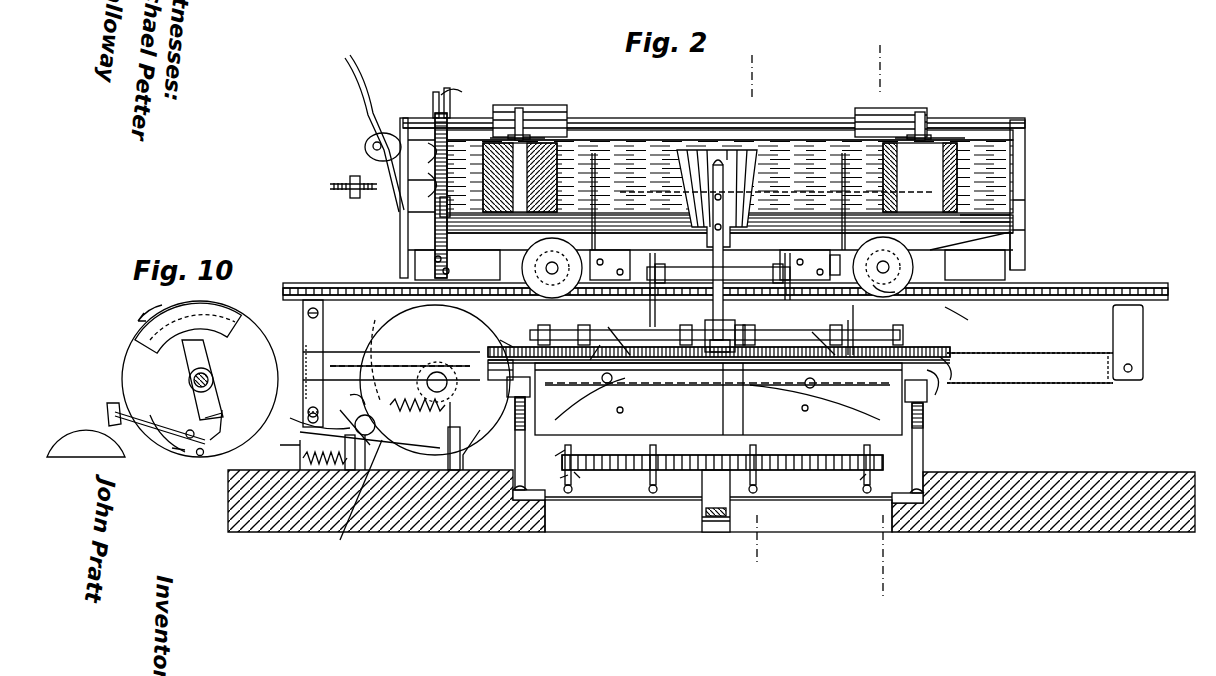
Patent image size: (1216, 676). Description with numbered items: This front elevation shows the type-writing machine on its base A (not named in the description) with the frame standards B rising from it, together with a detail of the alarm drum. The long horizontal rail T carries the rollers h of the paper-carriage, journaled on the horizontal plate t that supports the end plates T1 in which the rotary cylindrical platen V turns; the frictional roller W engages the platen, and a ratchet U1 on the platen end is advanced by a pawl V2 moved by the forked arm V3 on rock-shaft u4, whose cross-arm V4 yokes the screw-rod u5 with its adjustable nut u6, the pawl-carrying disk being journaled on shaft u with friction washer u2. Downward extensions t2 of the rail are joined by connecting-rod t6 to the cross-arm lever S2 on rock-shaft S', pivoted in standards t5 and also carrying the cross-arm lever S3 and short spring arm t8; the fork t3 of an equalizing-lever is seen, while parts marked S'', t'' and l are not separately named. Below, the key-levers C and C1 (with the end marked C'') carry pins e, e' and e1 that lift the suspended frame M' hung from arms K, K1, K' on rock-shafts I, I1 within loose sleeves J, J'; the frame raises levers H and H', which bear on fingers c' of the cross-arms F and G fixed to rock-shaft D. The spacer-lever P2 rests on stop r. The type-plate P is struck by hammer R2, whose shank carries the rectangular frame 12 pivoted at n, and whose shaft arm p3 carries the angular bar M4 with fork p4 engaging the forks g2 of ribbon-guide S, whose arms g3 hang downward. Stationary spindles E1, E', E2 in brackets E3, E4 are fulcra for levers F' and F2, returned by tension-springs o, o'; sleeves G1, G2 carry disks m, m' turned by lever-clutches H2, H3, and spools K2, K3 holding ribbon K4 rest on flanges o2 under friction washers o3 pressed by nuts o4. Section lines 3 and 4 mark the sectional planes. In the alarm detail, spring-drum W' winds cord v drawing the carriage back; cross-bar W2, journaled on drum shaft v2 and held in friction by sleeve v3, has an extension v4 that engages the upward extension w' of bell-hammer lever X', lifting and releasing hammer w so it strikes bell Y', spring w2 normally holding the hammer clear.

In FIG. 2, the base A is at (418, 532).
In FIG. 2, the frame standards B is at (514, 424).
In FIG. 2, the rail T is at (725, 323).
In FIG. 2, the platen V is at (660, 135).
In FIG. 2, the type-plate P is at (724, 180).
In FIG. 2, the rollers h is at (717, 267).
In FIG. 2, the arms K is at (719, 341).
In FIG. 2, the suspended frame M' is at (722, 453).
In FIG. 10, the spring-drum W' is at (200, 379).
In FIG. 10, the cross-bar W2 is at (188, 361).
In FIG. 10, the bell Y' is at (86, 443).
In FIG. 2, the lever F' is at (435, 380).
In FIG. 2, the cross-arm G is at (718, 399).
In FIG. 2, the spacer-lever P2 is at (702, 482).
In FIG. 2, the ribbon K4 is at (720, 177).
In FIG. 2, the frictional roller W is at (710, 110).
In FIG. 2, the spindle E1 is at (520, 108).
In FIG. 2, the spindle E2 is at (926, 112).
In FIG. 2, the bracket E3 is at (518, 387).
In FIG. 2, the bracket E4 is at (916, 391).
In FIG. 2, the end plate T1 is at (400, 236).
In FIG. 2, the ratchet U1 is at (435, 228).
In FIG. 2, the cross-arm V4 is at (370, 122).
In FIG. 2, the rock-shaft u4 is at (365, 146).
In FIG. 2, the screw-rod u5 is at (340, 190).
In FIG. 2, the adjustable nut u6 is at (357, 198).
In FIG. 2, the downward extensions t2 is at (303, 312).
In FIG. 2, the connecting-rod t6 is at (323, 318).
In FIG. 2, the guide-forks g2 is at (592, 175).
In FIG. 2, the hammer R2 is at (777, 182).
In FIG. 2, the section line 3 is at (755, 311).
In FIG. 2, the section line 4 is at (885, 320).
In FIG. 2, the stop r is at (712, 520).
In FIG. 2, the pins e is at (718, 457).
In FIG. 2, the pins e' is at (733, 463).
In FIG. 2, the rock-lever H is at (815, 399).
In FIG. 2, the rock-lever H' is at (590, 396).
In FIG. 2, the rock-shaft D is at (726, 399).
In FIG. 2, the ribbon-guide S is at (661, 266).
In FIG. 2, the tension-spring o is at (718, 270).
In FIG. 2, the tension-spring o' is at (710, 285).
In FIG. 2, the flanges o2 is at (944, 231).
In FIG. 2, the friction washers o3 is at (560, 134).
In FIG. 2, the nuts o4 is at (528, 134).
In FIG. 2, the sleeve G1 is at (458, 265).
In FIG. 2, the sleeve G2 is at (965, 318).
In FIG. 2, the horizontal plate t is at (692, 265).
In FIG. 2, the cord v is at (1012, 240).
In FIG. 2, the spool K3 is at (970, 215).
In FIG. 2, the arms K1 is at (548, 345).
In FIG. 2, the arms K' is at (666, 335).
In FIG. 2, the spool K2 is at (450, 217).
In FIG. 2, the rock-shaft I is at (821, 335).
In FIG. 2, the rock-shaft I1 is at (542, 331).
In FIG. 2, the loose sleeve J is at (858, 335).
In FIG. 2, the loose sleeve J' is at (669, 335).
In FIG. 2, the pivot n is at (720, 333).
In FIG. 2, the rectangular frame 12 is at (721, 345).
In FIG. 2, the lever-clutch H2 is at (590, 343).
In FIG. 2, the lever-clutch H3 is at (838, 337).
In FIG. 2, the arms g3 is at (720, 334).
In FIG. 2, the arm p3 is at (867, 330).
In FIG. 2, the fork p4 is at (825, 254).
In FIG. 2, the disk m is at (503, 336).
In FIG. 2, the disk m' is at (949, 357).
In FIG. 2, the angular bar M4 is at (883, 290).
In FIG. 2, the cross-arm F is at (536, 390).
In FIG. 2, the lever F2 is at (944, 384).
In FIG. 2, the spindle E' is at (500, 344).
In FIG. 2, the fingers c' is at (711, 415).
In FIG. 2, the key-levers C is at (716, 479).
In FIG. 2, the key-levers C1 is at (589, 480).
In FIG. 2, the pin C'' is at (853, 484).
In FIG. 2, the pins e1 is at (550, 455).
In FIG. 2, the cross-arm lever S2 is at (316, 409).
In FIG. 2, the rock-shaft S' is at (366, 418).
In FIG. 2, the lever S'' is at (288, 442).
In FIG. 2, the cross-arm lever S3 is at (451, 448).
In FIG. 2, the fork t3 is at (346, 390).
In FIG. 2, the spring t'' is at (379, 427).
In FIG. 2, the standards t5 is at (385, 452).
In FIG. 2, the short arm t8 is at (355, 496).
In FIG. 2, the shaft u is at (424, 152).
In FIG. 2, the friction spring-washer u2 is at (424, 185).
In FIG. 2, the pawl V2 is at (461, 99).
In FIG. 2, the forked arm V3 is at (426, 104).
In FIG. 2, the rod l is at (705, 125).
In FIG. 10, the drum shaft v2 is at (192, 380).
In FIG. 10, the sleeve v3 is at (208, 370).
In FIG. 10, the forward extension v4 is at (205, 418).
In FIG. 10, the bell-hammer w is at (146, 423).
In FIG. 10, the upward extension w' is at (212, 425).
In FIG. 10, the spring w2 is at (155, 448).
In FIG. 10, the bell-hammer lever X' is at (159, 421).